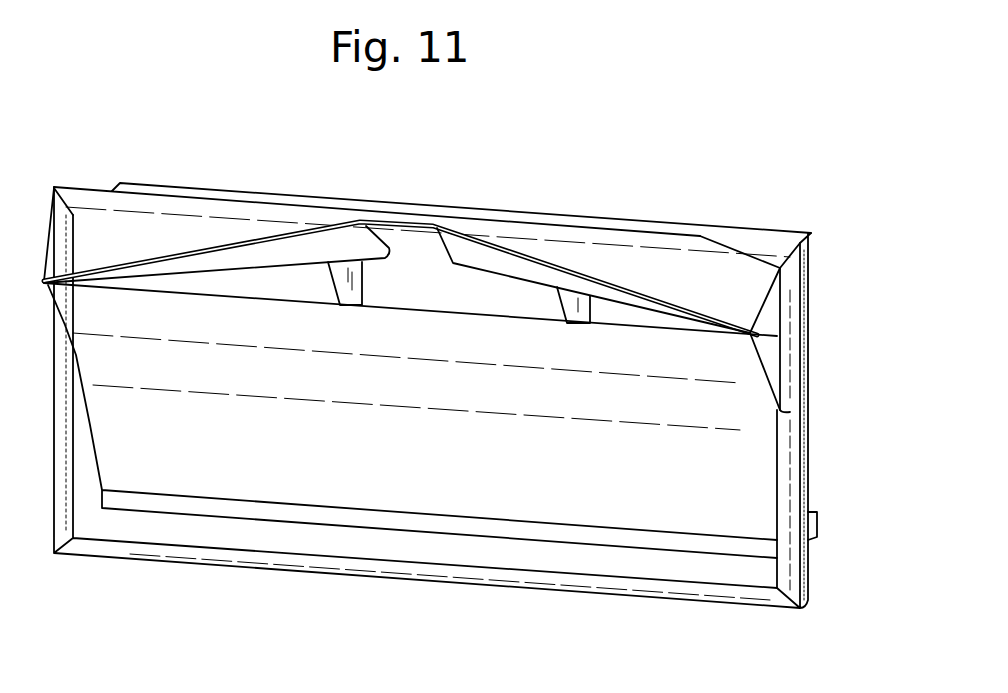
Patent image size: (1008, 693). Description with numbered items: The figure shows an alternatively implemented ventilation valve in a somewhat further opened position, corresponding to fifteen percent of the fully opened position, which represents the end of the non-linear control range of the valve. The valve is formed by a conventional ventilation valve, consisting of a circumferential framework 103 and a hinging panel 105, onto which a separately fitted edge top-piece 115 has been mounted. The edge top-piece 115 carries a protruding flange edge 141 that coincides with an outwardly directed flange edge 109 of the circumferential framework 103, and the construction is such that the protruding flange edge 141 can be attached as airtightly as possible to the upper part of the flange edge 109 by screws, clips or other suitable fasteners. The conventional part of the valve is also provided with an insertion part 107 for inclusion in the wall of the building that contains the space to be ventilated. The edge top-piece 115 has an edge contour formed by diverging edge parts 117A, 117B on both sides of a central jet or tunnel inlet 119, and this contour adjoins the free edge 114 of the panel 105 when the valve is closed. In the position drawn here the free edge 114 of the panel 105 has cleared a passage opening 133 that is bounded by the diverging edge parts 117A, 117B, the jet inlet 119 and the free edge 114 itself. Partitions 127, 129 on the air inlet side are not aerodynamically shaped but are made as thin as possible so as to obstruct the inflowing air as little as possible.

The circumferential framework 103 is at (212, 568).
The hinging panel 105 is at (422, 396).
The insertion part 107 is at (817, 537).
The flange edge 109 is at (787, 462).
The free edge 114 is at (693, 280).
The edge top-piece 115 is at (120, 238).
The diverging edge part 117A is at (273, 260).
The diverging edge part 117B is at (513, 272).
The jet inlet 119 is at (395, 220).
The partition 127 is at (583, 310).
The partition 129 is at (342, 280).
The passage opening 133 is at (417, 273).
The protruding flange edge 141 is at (790, 303).